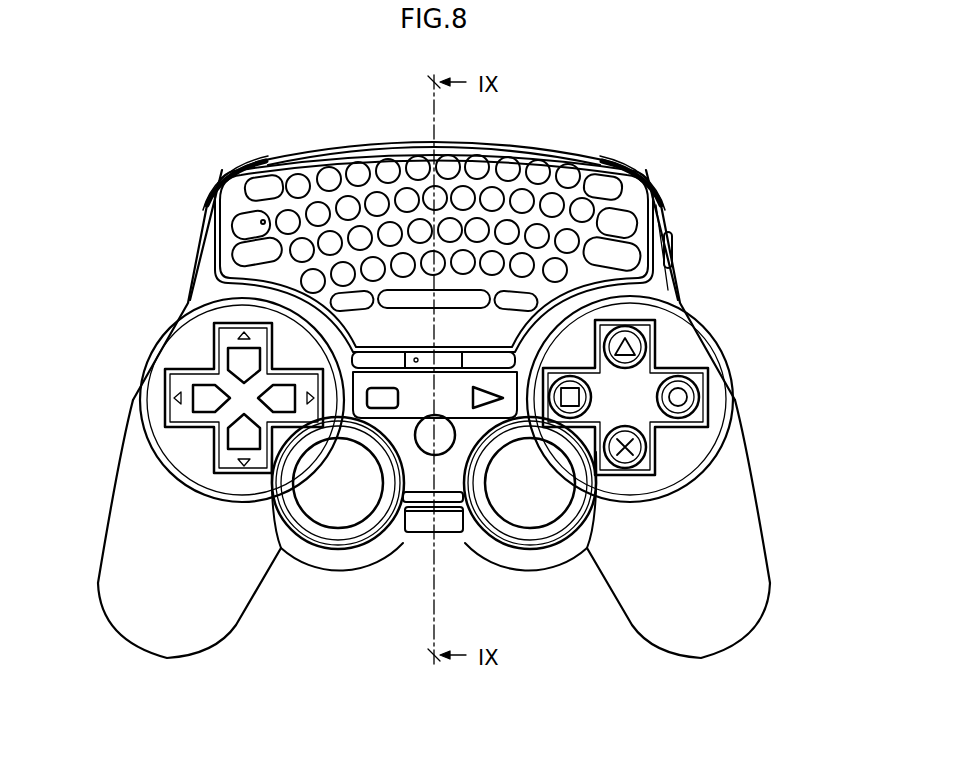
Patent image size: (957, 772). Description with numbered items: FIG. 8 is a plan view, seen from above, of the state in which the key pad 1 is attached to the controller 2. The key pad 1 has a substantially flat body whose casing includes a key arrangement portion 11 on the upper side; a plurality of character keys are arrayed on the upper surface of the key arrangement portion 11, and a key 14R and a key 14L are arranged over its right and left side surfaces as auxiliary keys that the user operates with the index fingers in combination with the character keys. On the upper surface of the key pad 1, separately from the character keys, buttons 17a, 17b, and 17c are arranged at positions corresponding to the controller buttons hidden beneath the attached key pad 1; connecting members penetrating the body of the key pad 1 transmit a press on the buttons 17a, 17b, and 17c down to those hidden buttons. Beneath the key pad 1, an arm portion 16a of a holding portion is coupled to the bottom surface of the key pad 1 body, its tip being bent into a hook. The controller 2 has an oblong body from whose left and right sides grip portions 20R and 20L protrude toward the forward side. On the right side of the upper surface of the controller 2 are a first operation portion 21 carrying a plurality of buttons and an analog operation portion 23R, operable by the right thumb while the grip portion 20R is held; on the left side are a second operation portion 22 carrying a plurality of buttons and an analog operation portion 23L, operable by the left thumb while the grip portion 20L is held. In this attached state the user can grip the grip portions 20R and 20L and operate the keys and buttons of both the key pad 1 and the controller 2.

The key pad 1 is at (613, 100).
The controller 2 is at (580, 662).
The key arrangement portion 11 is at (657, 217).
The key 14L is at (226, 172).
The key 14R is at (642, 172).
The arm portion 16a is at (423, 535).
The button 17a is at (385, 390).
The button 17b is at (486, 390).
The button 17c is at (443, 440).
The grip portion 20L is at (136, 546).
The grip portion 20R is at (733, 545).
The first operation portion 21 is at (676, 352).
The second operation portion 22 is at (195, 352).
The analog operation portion 23L is at (338, 513).
The analog operation portion 23R is at (530, 513).